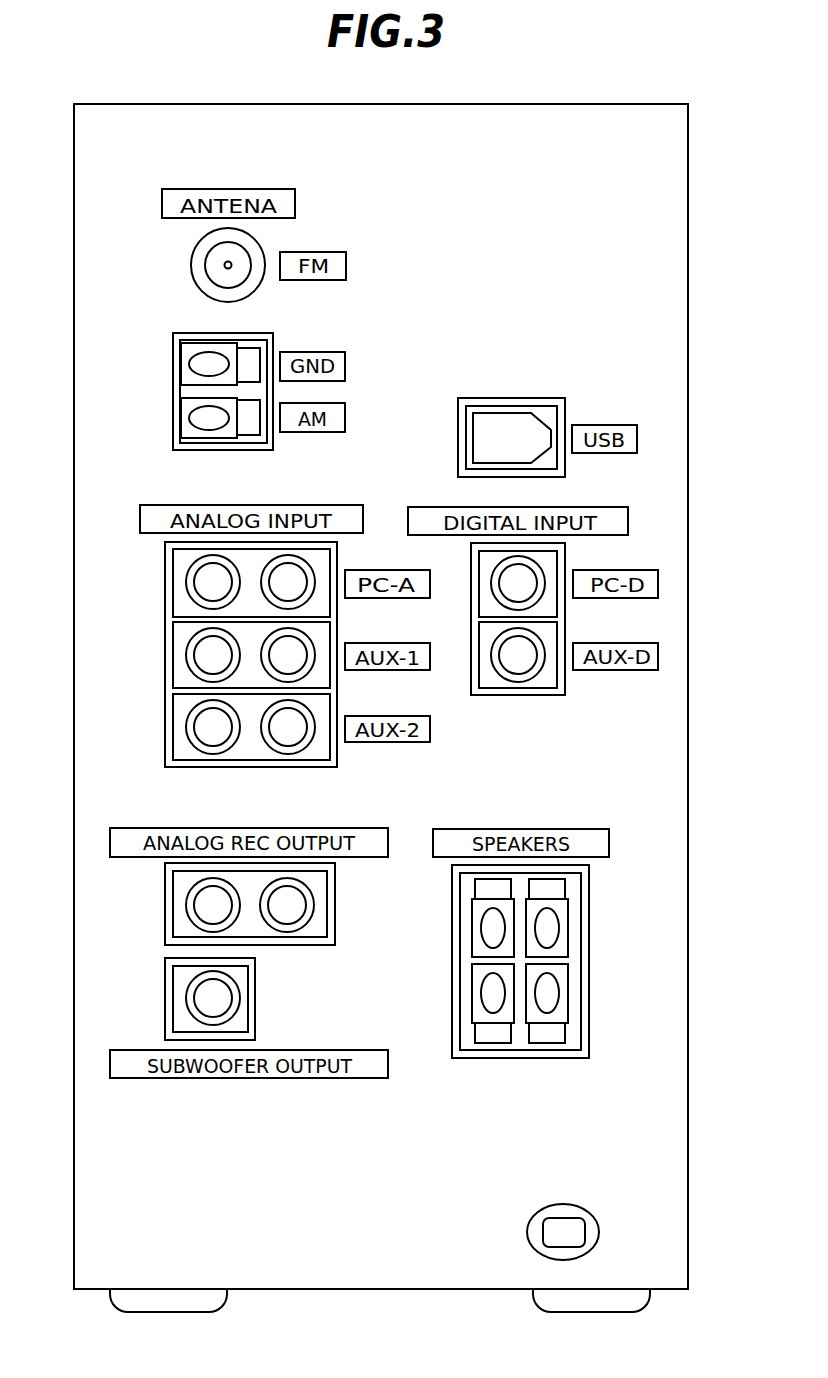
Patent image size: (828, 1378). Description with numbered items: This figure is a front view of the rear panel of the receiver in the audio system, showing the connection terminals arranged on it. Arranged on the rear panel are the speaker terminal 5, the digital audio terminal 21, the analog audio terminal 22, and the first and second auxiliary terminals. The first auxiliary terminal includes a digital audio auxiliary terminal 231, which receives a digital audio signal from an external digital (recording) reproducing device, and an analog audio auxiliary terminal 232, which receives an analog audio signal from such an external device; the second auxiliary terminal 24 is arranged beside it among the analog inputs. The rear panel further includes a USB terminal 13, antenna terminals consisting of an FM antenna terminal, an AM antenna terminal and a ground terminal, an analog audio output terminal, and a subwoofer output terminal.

The USB terminal 13 is at (510, 398).
The digital audio terminal 21 is at (479, 568).
The analog audio terminal 22 is at (165, 580).
The analog audio auxiliary terminal 232 is at (173, 653).
The second auxiliary terminal 24 is at (173, 724).
The digital audio auxiliary terminal 231 is at (518, 688).
The speaker terminal 5 is at (518, 1058).